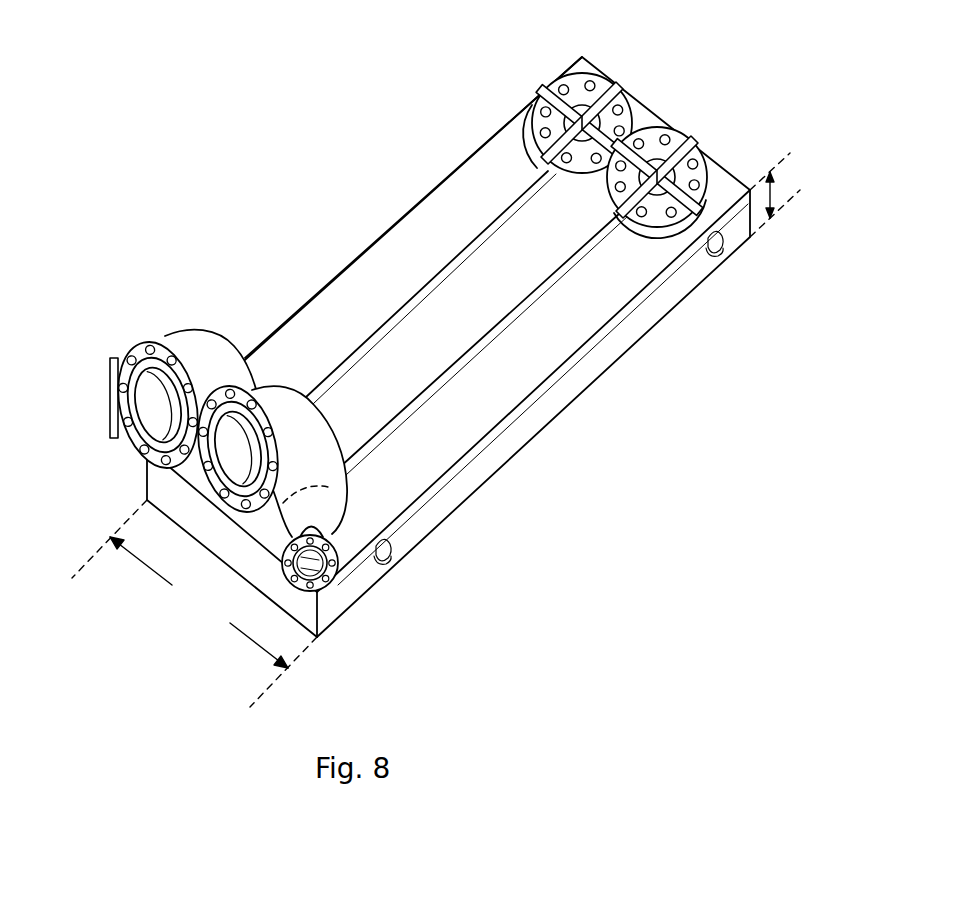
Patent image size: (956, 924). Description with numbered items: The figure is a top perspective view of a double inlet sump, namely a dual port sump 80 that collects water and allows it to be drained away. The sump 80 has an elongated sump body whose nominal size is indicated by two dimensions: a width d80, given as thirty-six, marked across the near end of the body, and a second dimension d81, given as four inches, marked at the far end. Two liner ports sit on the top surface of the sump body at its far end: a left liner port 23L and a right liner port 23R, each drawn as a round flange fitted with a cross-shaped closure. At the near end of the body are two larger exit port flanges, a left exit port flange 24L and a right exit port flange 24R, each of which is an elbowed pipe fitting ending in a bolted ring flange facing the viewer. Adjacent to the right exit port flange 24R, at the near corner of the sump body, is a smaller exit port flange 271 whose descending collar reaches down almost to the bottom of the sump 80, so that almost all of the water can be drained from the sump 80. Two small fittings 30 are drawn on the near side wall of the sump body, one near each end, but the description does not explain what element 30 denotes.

The left liner port 23L is at (598, 67).
The right liner port 23R is at (700, 152).
The left exit port flange 24L is at (185, 335).
The right exit port flange 24R is at (315, 443).
The fastening bracket 30 is at (723, 255).
The dual port sump 80 is at (530, 458).
The smaller exit port flange 271 is at (336, 598).
The width of the sump body d80 is at (194, 603).
The thickness dimension of the sump body d81 is at (782, 195).